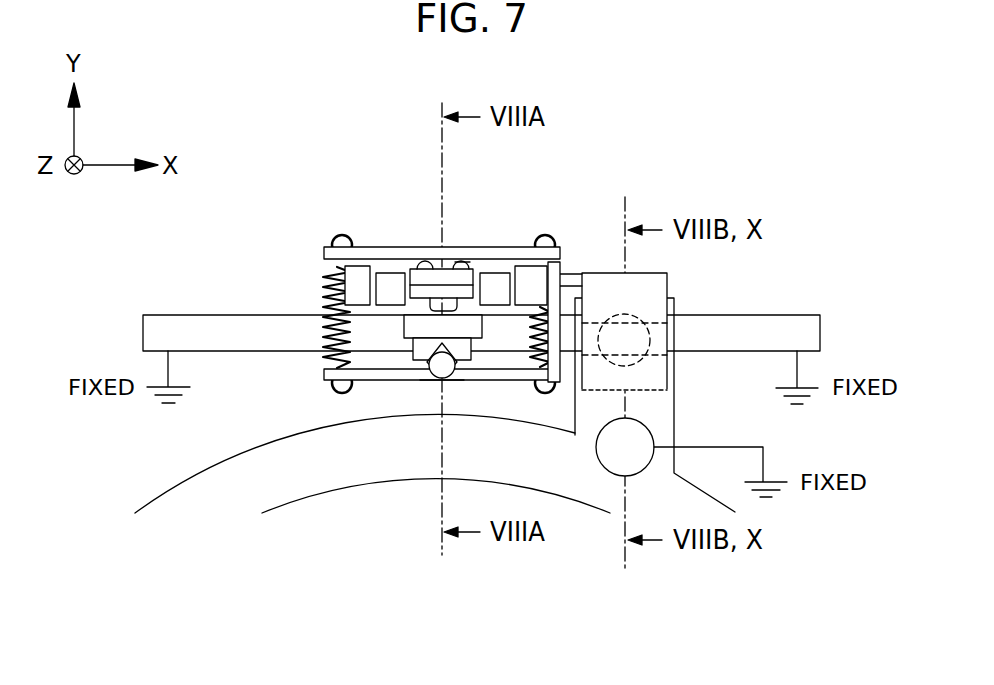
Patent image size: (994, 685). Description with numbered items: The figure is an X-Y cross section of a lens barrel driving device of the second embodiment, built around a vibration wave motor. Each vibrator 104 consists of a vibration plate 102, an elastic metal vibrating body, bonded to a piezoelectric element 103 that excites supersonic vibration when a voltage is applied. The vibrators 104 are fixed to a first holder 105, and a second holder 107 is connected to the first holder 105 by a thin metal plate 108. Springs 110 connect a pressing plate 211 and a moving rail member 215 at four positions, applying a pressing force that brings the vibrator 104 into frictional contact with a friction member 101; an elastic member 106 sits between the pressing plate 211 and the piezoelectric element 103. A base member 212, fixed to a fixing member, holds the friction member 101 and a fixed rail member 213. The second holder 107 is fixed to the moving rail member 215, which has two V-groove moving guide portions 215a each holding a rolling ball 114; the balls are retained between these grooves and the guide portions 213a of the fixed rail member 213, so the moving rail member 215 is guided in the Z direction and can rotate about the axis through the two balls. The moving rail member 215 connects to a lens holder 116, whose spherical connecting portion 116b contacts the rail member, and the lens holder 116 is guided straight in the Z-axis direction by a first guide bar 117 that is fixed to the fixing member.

The friction member 101 is at (478, 338).
The vibration plate 102 is at (505, 272).
The piezoelectric element 103 is at (462, 266).
The vibrator 104 is at (457, 185).
The first holder 105 is at (540, 266).
The elastic member 106 is at (437, 262).
The second holder 107 is at (556, 262).
The thin metal plate 108 is at (357, 264).
The spring 110 is at (323, 272).
The rolling ball 114 is at (325, 376).
The lens holder 116 is at (674, 406).
The connecting portion 116b is at (648, 348).
The first guide bar 117 is at (645, 437).
The pressing plate 211 is at (395, 252).
The base member 212 is at (787, 316).
The fixed rail member 213 is at (456, 368).
The moving guide portion 213a is at (428, 357).
The moving rail member 215 is at (355, 384).
The moving guide portion 215a is at (433, 380).